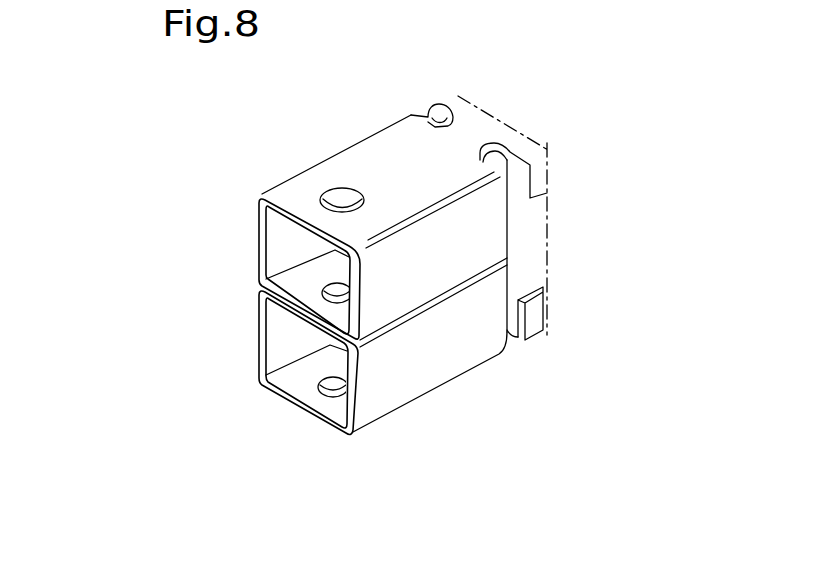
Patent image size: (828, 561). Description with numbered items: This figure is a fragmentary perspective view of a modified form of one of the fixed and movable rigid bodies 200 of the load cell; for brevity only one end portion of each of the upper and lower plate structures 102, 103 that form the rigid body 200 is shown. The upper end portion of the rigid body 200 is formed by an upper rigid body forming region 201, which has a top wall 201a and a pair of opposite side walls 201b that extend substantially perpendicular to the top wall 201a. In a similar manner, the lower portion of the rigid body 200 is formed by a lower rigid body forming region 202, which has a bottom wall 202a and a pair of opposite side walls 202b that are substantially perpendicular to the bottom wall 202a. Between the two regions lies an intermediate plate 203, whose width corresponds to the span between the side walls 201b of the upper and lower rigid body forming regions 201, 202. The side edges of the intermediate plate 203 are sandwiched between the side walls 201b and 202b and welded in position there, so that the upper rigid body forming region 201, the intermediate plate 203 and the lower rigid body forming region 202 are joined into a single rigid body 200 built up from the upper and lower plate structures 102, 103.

The fixed or movable rigid body 200 is at (141, 143).
The upper rigid body forming region 201 is at (287, 196).
The top wall 201a is at (422, 185).
The side walls 201b is at (338, 260).
The lower rigid body forming region 202 is at (290, 410).
The bottom wall 202a is at (313, 425).
The side walls 202b is at (318, 378).
The intermediate plate 203 is at (482, 266).
The upper plate structure 102 is at (470, 118).
The lower plate structure 103 is at (522, 338).